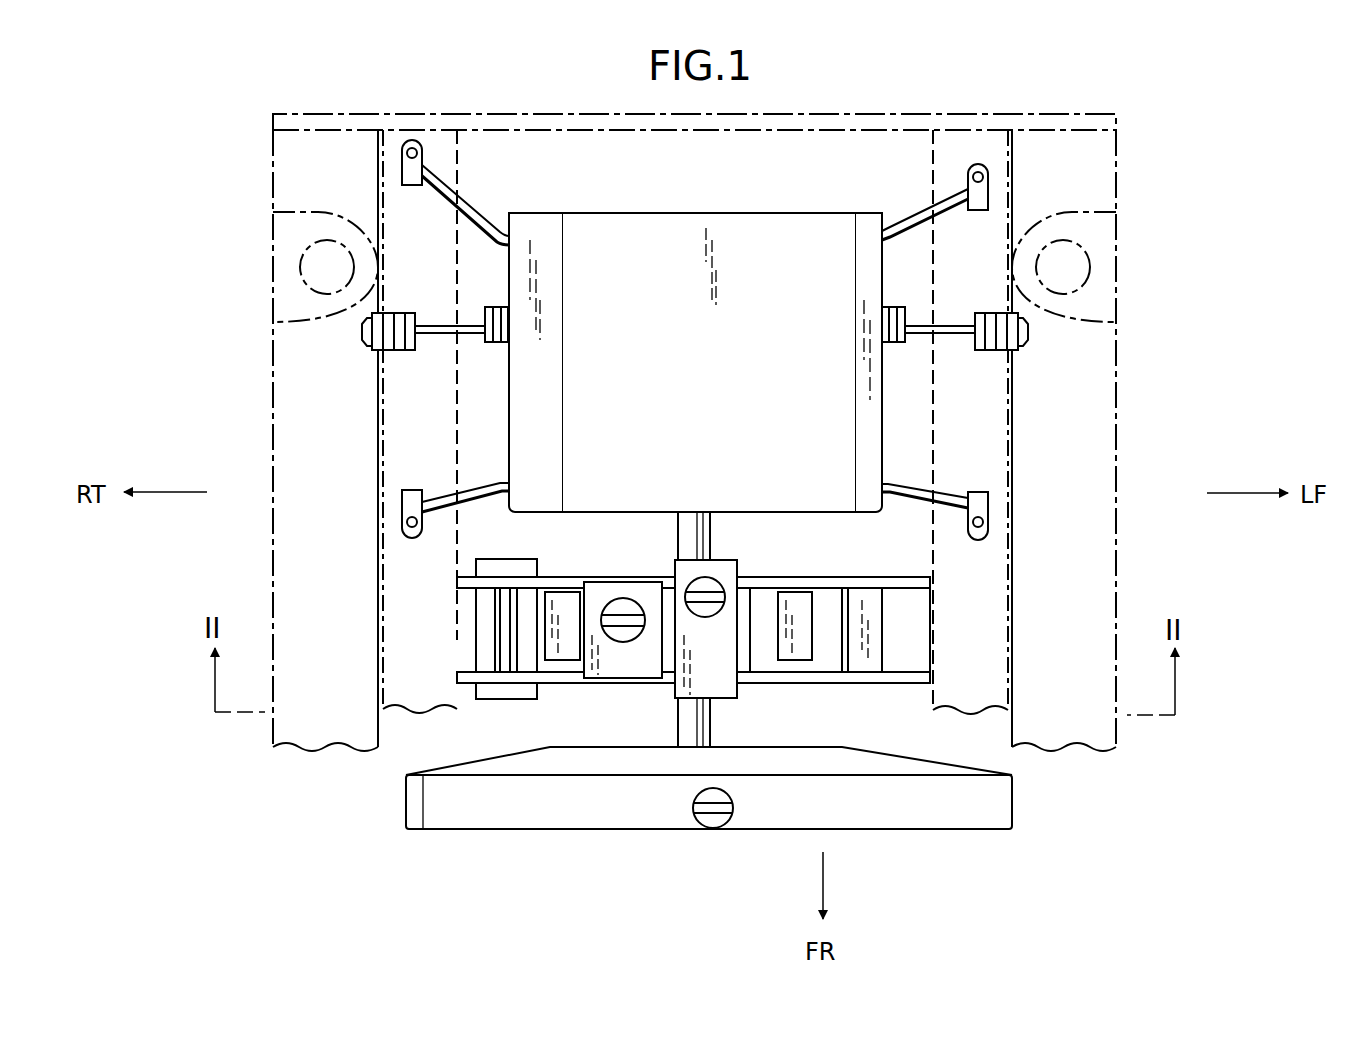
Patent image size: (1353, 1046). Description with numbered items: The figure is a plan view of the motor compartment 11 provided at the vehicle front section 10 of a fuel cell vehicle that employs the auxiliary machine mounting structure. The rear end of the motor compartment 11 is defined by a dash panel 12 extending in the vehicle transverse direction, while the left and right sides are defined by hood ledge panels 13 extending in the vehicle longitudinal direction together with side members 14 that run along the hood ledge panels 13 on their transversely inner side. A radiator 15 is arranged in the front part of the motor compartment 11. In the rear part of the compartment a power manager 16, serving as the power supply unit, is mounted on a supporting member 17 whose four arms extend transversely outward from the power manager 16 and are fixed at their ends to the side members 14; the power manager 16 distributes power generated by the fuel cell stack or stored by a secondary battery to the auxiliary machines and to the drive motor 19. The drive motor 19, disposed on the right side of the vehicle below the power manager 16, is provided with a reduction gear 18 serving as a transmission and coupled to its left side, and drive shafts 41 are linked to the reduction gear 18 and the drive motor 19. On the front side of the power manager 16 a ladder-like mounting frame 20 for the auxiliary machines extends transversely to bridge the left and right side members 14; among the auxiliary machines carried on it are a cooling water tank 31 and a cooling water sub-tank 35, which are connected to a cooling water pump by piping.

The vehicle front section 10 is at (237, 795).
The motor compartment 11 is at (744, 188).
The dash panel 12 is at (455, 128).
The hood ledge panels 13 is at (314, 563).
The side members 14 is at (421, 658).
The radiator 15 is at (968, 812).
The power manager 16 is at (722, 380).
The supporting member 17 is at (908, 218).
The reduction gear 18 is at (870, 413).
The drive motor 19 is at (538, 405).
The mounting frame 20 is at (822, 647).
The cooling water tank 31 is at (624, 655).
The cooling water sub-tank 35 is at (712, 658).
The drive shafts 41 is at (947, 327).